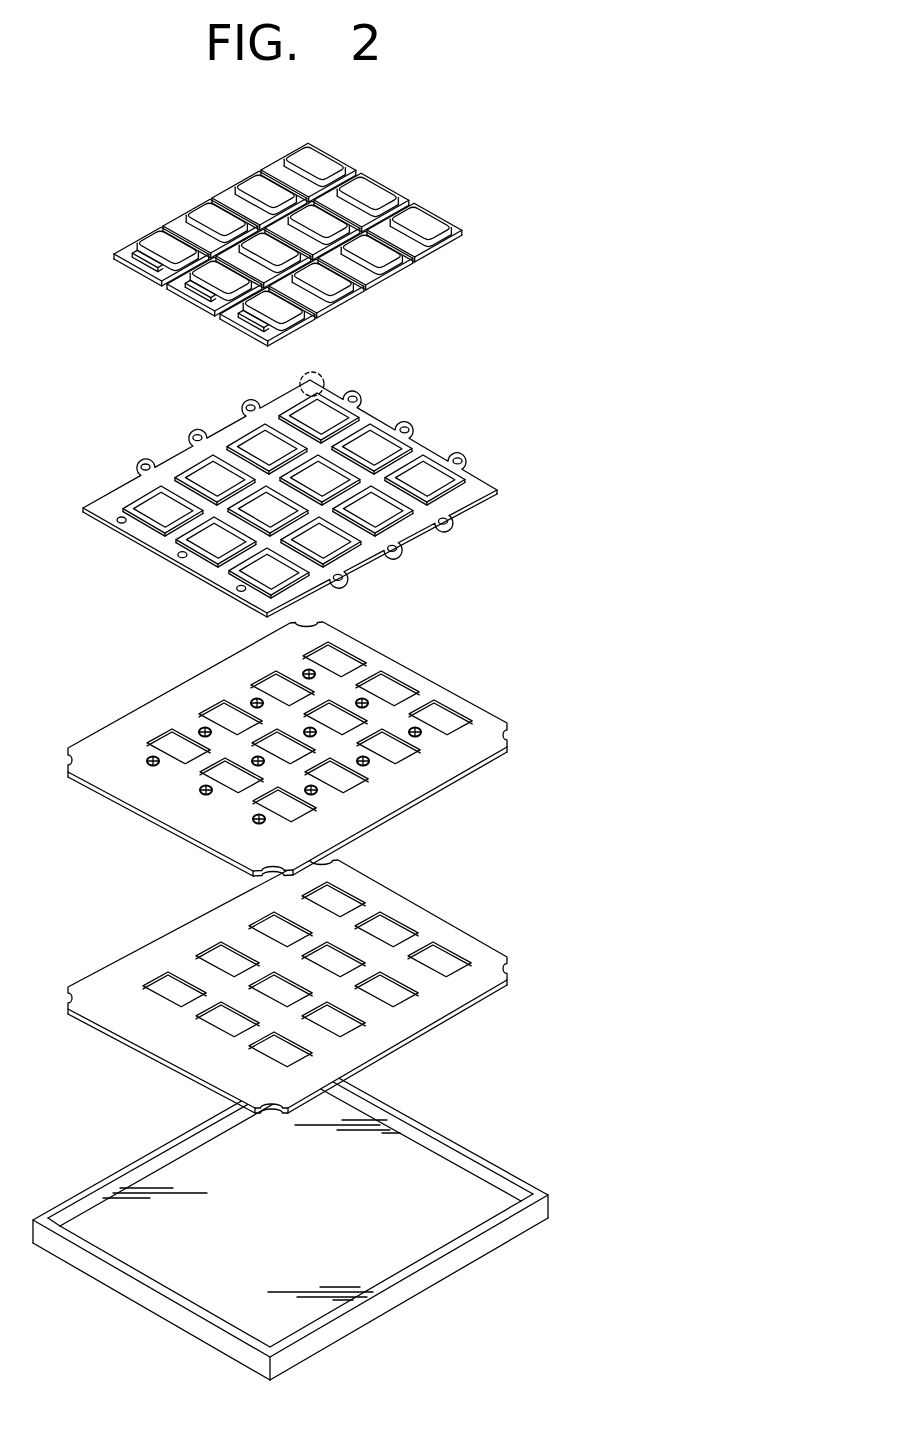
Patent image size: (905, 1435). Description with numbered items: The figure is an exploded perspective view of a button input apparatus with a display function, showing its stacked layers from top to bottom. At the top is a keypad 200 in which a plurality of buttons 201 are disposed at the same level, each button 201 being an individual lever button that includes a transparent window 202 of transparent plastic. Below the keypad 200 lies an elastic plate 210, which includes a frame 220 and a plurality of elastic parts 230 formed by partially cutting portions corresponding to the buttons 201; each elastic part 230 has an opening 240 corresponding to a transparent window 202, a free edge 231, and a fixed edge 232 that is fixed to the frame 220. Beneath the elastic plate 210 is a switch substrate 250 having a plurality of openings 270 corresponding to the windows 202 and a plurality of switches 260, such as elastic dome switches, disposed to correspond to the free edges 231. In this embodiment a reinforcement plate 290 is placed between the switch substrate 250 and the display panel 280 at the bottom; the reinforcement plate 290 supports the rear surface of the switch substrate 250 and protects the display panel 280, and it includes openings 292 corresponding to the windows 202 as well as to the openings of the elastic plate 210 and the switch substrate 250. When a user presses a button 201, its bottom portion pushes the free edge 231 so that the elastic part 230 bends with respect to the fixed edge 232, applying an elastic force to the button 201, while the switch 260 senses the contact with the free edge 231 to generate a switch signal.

The keypad 200 is at (268, 217).
The button 201 is at (138, 262).
The transparent window 202 is at (158, 238).
The elastic plate 210 is at (316, 472).
The frame 220 is at (373, 412).
The elastic part 230 is at (245, 450).
The free edge 231 is at (225, 455).
The fixed edge 232 is at (300, 378).
The opening 240 is at (327, 413).
The switch substrate 250 is at (301, 720).
The switch 260 is at (200, 732).
The opening 270 is at (222, 720).
The display panel 280 is at (413, 1177).
The reinforcement plate 290 is at (307, 976).
The opening 292 is at (387, 930).